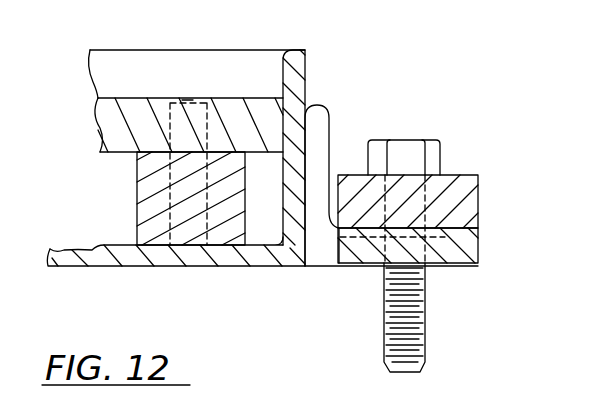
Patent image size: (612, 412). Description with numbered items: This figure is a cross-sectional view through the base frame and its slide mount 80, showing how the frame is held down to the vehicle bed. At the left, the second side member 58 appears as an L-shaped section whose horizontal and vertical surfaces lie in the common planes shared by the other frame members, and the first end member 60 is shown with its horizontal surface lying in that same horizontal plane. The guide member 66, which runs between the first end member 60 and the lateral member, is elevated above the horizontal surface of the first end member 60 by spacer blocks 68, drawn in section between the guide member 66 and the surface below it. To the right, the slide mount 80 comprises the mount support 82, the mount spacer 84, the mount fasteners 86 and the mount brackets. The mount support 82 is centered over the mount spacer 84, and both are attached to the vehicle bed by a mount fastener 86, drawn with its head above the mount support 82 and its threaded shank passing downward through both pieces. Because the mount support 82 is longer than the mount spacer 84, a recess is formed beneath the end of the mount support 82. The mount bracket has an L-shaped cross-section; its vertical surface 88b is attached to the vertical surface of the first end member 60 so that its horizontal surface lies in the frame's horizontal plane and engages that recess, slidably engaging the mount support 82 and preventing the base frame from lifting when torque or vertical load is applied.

The second side member 58 is at (170, 50).
The guide member 66 is at (96, 125).
The spacer blocks 68 is at (137, 205).
The first end member 60 is at (242, 267).
The vertical surface of mount bracket 88b is at (322, 105).
The slide mount 80 is at (440, 220).
The mount fasteners 86 is at (438, 140).
The mount support 82 is at (478, 196).
The mount spacer 84 is at (478, 249).